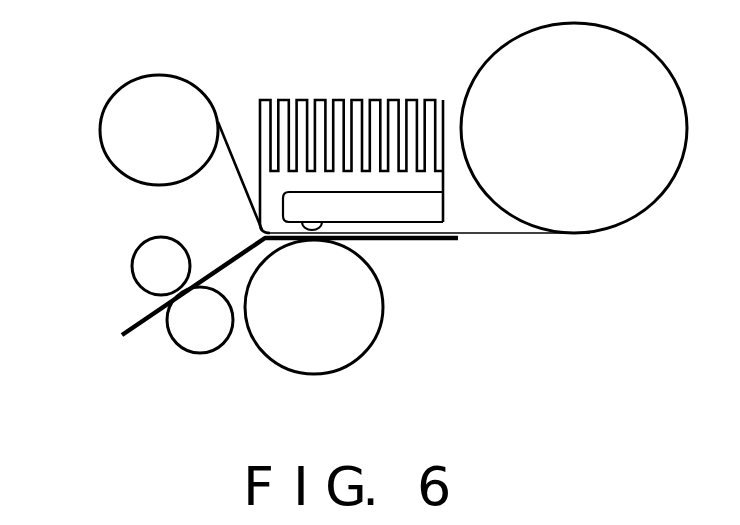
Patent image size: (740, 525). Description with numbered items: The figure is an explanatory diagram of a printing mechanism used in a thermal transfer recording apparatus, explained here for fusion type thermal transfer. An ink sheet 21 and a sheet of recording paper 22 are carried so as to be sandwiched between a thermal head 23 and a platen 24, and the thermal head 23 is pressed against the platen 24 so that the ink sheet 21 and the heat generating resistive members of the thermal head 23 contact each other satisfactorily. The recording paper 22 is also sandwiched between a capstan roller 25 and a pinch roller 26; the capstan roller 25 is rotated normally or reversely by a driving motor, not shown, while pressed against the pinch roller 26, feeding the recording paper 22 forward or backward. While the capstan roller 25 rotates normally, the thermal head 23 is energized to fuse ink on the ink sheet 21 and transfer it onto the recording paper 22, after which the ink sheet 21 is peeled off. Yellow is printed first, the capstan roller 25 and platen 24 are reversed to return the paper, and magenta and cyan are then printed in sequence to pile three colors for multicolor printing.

The ink sheet 21 is at (237, 170).
The recording paper 22 is at (147, 312).
The thermal head 23 is at (398, 210).
The platen 24 is at (355, 338).
The capstan roller 25 is at (197, 345).
The pinch roller 26 is at (140, 263).